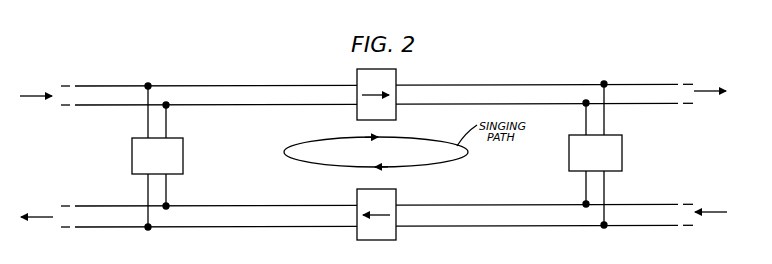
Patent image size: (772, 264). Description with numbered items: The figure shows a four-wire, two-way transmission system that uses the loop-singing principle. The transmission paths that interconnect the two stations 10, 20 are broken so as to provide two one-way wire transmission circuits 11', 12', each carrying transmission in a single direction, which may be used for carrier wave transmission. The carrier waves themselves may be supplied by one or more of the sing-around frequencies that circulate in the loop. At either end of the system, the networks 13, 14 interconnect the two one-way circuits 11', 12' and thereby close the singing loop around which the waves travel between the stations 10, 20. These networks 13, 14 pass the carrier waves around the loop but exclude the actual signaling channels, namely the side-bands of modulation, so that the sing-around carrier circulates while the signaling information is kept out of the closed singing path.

The station 10 is at (397, 75).
The station 20 is at (393, 240).
The network 13 is at (187, 147).
The network 14 is at (623, 142).
The one-way wire transmission circuit 11' is at (377, 80).
The one-way wire transmission circuit 12' is at (377, 231).